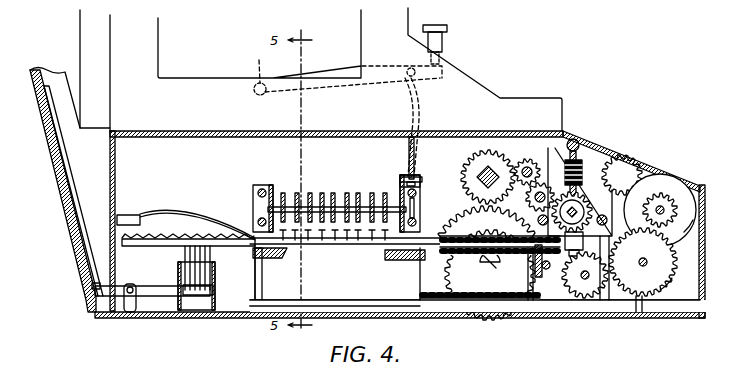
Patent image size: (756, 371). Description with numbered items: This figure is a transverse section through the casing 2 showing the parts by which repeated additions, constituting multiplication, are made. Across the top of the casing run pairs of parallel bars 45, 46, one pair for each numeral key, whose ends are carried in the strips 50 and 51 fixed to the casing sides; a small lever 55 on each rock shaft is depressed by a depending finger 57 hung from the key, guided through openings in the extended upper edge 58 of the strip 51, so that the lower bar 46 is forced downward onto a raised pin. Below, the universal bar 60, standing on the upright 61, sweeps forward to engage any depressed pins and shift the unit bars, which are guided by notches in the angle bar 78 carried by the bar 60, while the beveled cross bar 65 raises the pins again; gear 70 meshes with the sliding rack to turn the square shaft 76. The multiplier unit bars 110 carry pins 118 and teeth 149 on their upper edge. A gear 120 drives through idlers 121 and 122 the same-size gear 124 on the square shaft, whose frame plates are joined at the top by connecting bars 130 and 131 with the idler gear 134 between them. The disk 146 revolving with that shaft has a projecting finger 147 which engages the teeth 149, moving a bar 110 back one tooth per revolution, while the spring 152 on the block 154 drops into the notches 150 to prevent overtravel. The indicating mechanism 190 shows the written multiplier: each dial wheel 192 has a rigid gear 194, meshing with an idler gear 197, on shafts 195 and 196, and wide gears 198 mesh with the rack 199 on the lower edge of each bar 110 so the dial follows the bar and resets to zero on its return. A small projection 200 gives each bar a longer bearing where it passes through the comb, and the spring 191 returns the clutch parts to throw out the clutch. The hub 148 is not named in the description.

The casing 2 is at (636, 168).
The parallel bar 45 is at (342, 192).
The parallel bar 46 is at (372, 193).
The strip 50 is at (278, 184).
The strip 51 is at (400, 180).
The small lever 55 is at (416, 208).
The depending finger 57 is at (420, 116).
The upper edge of strip 58 is at (409, 166).
The universal bar 60 is at (280, 258).
The upright 61 is at (262, 282).
The cross bar 65 is at (412, 262).
The gear 70 is at (490, 275).
The square shaft 76 is at (477, 177).
The angle bar 78 is at (244, 258).
The unit bar 110 is at (350, 246).
The pin 118 is at (318, 246).
The gear 120 is at (470, 170).
The idler gear 121 is at (518, 166).
The idler gear 122 is at (540, 184).
The gear 124 is at (556, 150).
The connecting bar 130 is at (577, 196).
The connecting bar 131 is at (574, 139).
The idler gear 134 is at (600, 165).
The disk 146 is at (630, 261).
The projecting finger 147 is at (514, 237).
The gear shaft 148 is at (586, 267).
The teeth 149 is at (442, 232).
The notch 150 is at (214, 238).
The spring 152 is at (186, 212).
The block 154 is at (138, 216).
The indicating mechanism 190 is at (660, 178).
The spring 191 is at (643, 262).
The dial wheel 192 is at (684, 186).
The gear 194 is at (676, 212).
The shaft 195 is at (686, 226).
The shaft 196 is at (664, 282).
The idler gear 197 is at (640, 298).
The gear 198 is at (580, 298).
The rack 199 is at (470, 286).
The small projection 200 is at (546, 272).